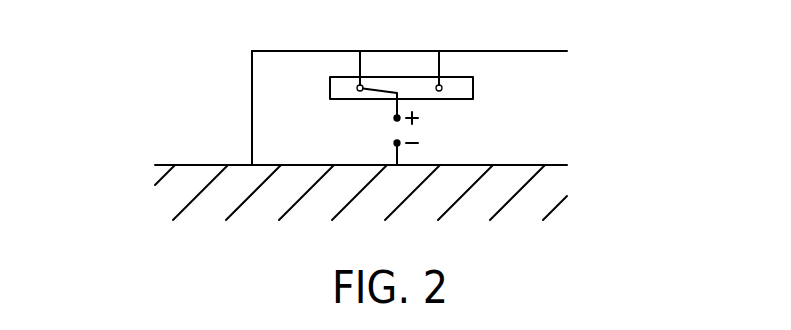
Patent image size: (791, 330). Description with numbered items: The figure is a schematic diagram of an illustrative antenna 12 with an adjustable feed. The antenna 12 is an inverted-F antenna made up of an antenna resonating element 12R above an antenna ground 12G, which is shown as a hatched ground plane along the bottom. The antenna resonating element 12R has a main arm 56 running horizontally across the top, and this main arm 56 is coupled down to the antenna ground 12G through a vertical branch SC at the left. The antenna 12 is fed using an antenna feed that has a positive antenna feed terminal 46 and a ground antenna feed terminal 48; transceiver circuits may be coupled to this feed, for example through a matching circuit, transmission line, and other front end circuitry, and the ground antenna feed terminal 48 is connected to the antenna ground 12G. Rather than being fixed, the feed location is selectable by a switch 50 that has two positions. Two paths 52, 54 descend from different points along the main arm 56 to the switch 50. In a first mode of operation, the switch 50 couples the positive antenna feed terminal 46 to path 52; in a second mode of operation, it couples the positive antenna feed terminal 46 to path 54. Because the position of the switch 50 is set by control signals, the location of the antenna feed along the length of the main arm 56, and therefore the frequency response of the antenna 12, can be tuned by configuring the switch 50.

The antenna 12 is at (640, 40).
The antenna resonating element 12R is at (210, 40).
The antenna ground 12G is at (137, 167).
The main arm 56 is at (507, 51).
The branch SC is at (252, 106).
The switch 50 is at (473, 85).
The path 52 is at (361, 63).
The path 54 is at (440, 63).
The positive antenna feed terminal 46 is at (394, 118).
The ground antenna feed terminal 48 is at (394, 144).